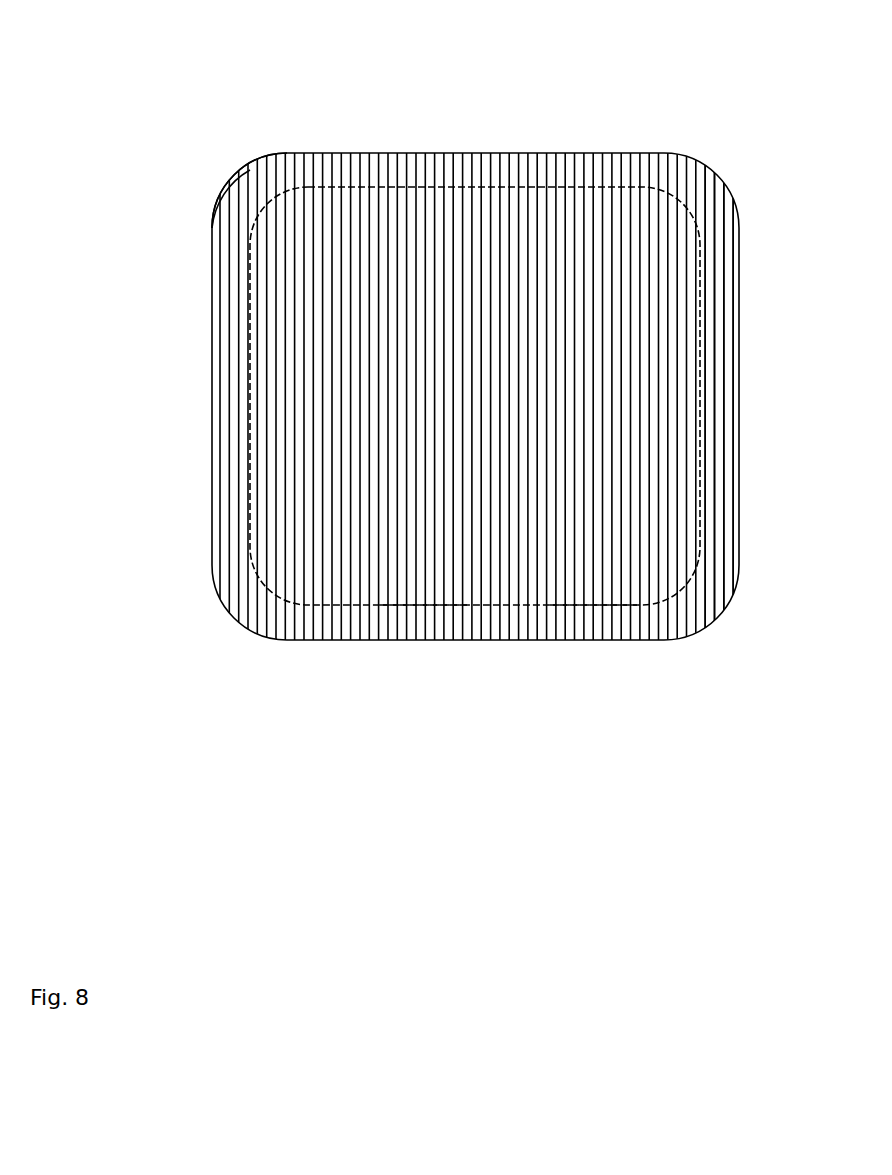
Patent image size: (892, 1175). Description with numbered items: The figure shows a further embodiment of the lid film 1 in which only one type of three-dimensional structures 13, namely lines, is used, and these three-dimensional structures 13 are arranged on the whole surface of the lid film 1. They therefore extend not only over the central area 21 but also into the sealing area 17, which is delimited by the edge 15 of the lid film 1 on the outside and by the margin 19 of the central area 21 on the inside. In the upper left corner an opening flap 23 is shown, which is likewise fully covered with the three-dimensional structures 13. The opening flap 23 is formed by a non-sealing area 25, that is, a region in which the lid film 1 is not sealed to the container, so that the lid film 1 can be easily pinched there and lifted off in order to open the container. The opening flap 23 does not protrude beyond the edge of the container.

The lid film 1 is at (552, 82).
The three-dimensional structures 13 is at (212, 228).
The edge 15 is at (739, 259).
The sealing area 17 is at (725, 377).
The margin of the central area 19 is at (592, 603).
The central area 21 is at (430, 595).
The opening flap 23 is at (233, 177).
The non-sealing area 25 is at (225, 203).